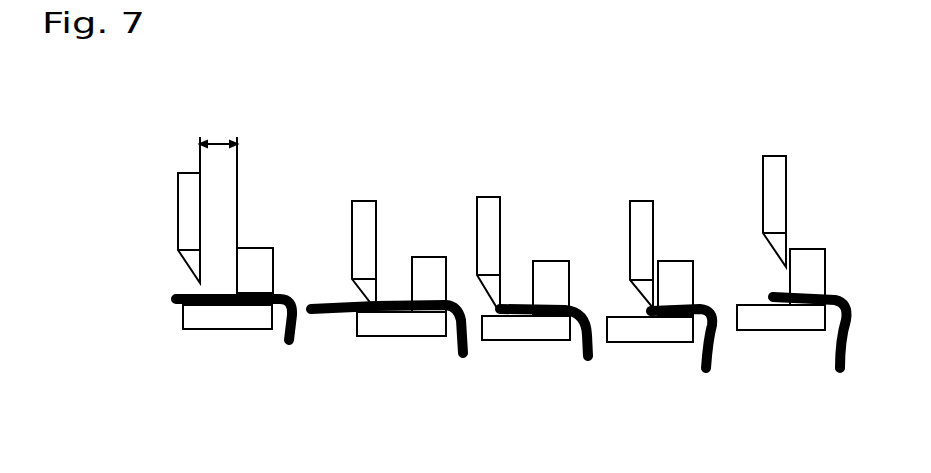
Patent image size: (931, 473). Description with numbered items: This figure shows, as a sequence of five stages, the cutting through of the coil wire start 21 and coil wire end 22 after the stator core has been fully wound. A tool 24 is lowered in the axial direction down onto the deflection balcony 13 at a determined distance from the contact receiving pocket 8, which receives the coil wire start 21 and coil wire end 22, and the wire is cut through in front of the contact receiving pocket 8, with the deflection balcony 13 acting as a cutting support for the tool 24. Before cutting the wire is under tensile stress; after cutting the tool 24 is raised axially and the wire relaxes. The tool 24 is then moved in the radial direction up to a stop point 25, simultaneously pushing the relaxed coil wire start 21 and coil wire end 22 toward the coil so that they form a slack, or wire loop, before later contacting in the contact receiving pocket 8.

The contact receiving pocket 8 is at (258, 260).
The deflection balcony 13 is at (213, 320).
The coil wire start 21 is at (268, 356).
The coil wire end 22 is at (283, 332).
The tool 24 is at (189, 204).
The stop point 25 is at (650, 316).